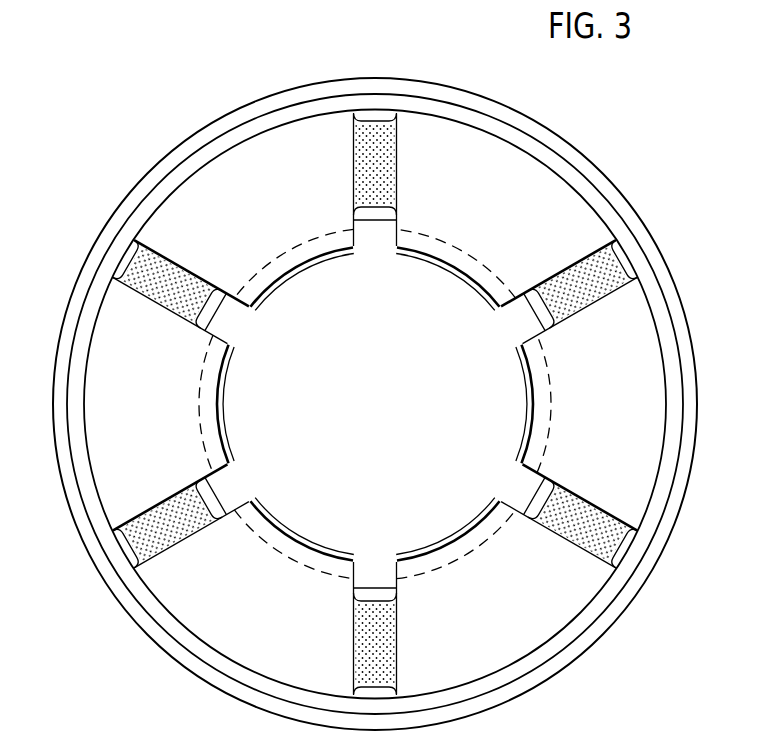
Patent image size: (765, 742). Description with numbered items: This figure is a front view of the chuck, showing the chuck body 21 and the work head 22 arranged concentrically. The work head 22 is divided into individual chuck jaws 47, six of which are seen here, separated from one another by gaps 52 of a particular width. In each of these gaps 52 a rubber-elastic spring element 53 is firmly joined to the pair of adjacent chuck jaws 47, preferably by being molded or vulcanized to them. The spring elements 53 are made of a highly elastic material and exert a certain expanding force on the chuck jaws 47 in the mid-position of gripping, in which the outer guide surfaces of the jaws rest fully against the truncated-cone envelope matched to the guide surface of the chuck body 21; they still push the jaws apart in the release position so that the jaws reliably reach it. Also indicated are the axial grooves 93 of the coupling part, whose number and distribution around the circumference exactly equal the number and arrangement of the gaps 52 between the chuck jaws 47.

The chuck body 21 is at (272, 93).
The work head 22 is at (488, 132).
The chuck jaws 47 is at (331, 131).
The gaps 52 is at (200, 325).
The rubber-elastic spring elements 53 is at (387, 643).
The axial grooves 93 is at (223, 292).